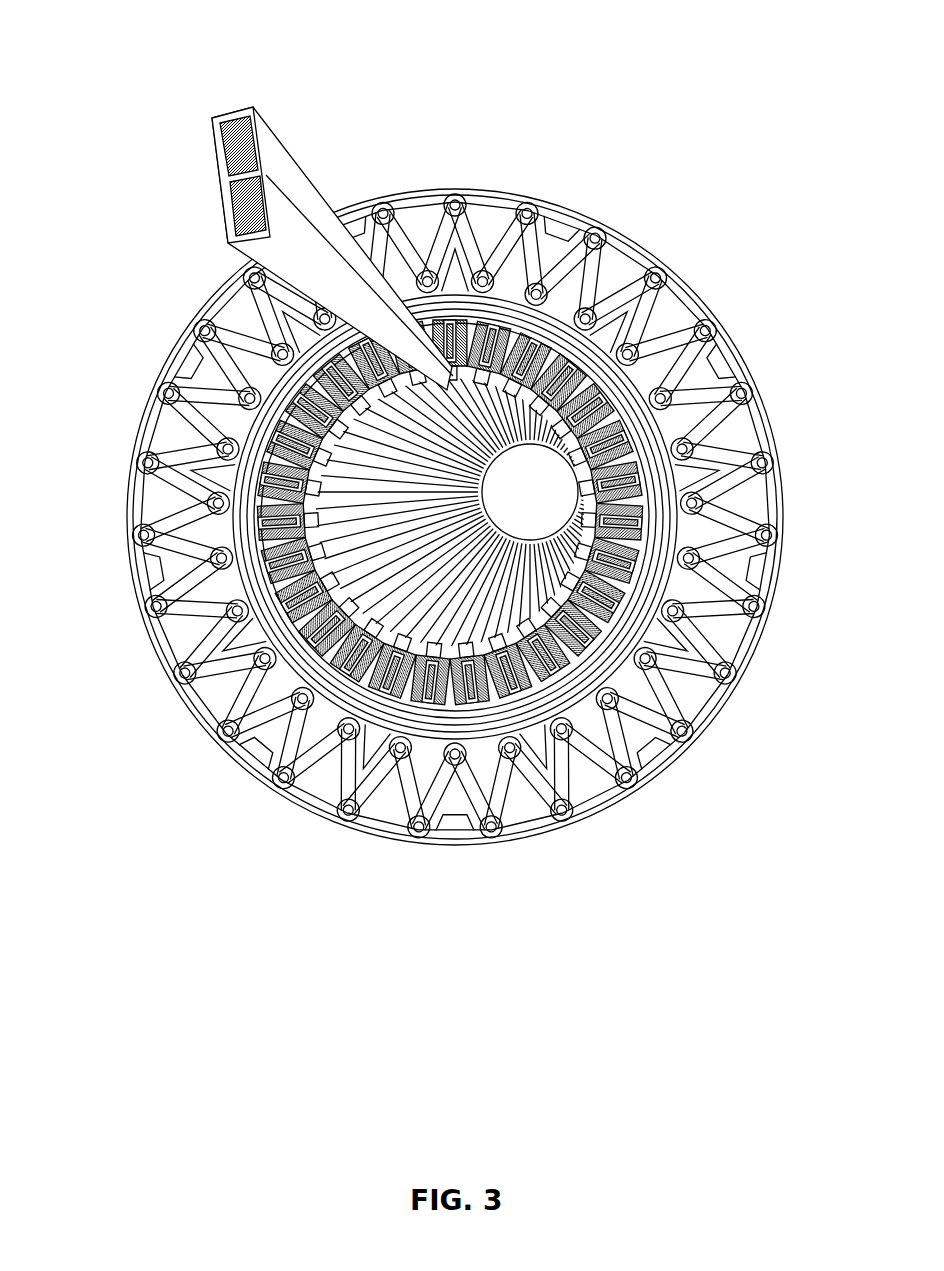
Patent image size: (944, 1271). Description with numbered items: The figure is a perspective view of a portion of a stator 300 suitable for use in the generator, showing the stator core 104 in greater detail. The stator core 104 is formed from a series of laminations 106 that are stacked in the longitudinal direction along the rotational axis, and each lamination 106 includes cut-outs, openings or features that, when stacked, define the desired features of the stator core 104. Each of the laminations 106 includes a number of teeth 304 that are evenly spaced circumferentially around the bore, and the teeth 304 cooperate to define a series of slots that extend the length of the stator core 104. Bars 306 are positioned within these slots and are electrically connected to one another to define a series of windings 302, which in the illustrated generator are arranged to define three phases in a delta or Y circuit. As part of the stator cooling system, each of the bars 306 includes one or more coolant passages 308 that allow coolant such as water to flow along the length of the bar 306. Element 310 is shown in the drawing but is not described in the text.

The stator 300 is at (461, 449).
The stator core 104 is at (322, 783).
The laminations 106 is at (672, 322).
The windings 302 is at (461, 483).
The teeth 304 is at (617, 696).
The bars 306 is at (293, 183).
The coolant passages 308 is at (214, 146).
The rotor 310 is at (265, 578).